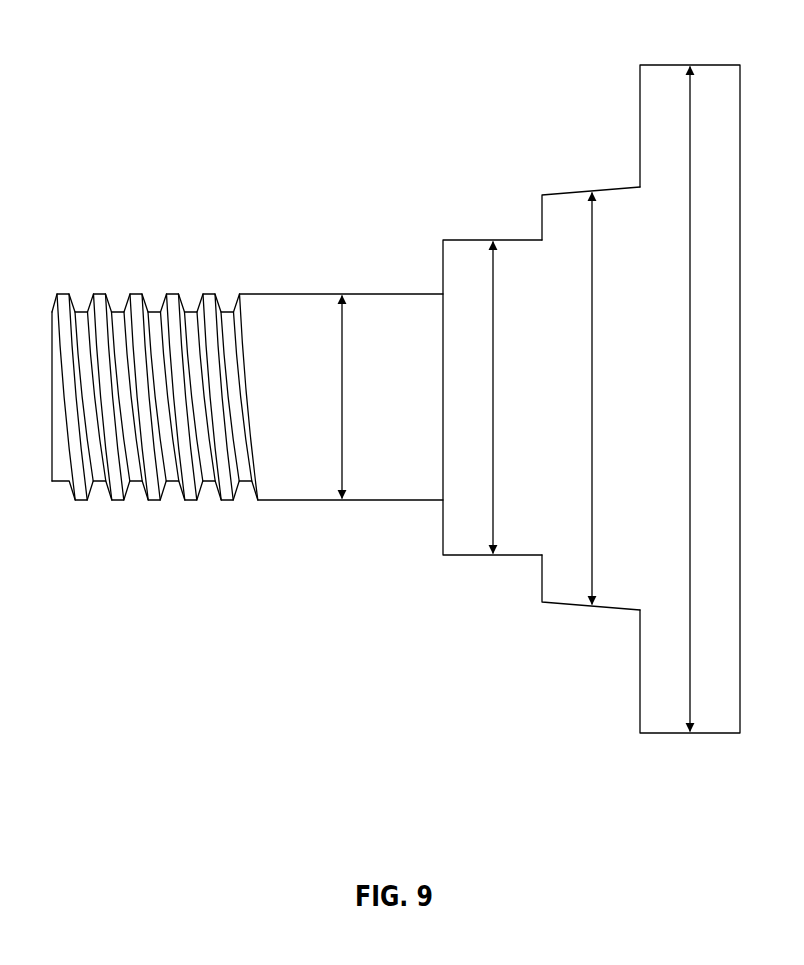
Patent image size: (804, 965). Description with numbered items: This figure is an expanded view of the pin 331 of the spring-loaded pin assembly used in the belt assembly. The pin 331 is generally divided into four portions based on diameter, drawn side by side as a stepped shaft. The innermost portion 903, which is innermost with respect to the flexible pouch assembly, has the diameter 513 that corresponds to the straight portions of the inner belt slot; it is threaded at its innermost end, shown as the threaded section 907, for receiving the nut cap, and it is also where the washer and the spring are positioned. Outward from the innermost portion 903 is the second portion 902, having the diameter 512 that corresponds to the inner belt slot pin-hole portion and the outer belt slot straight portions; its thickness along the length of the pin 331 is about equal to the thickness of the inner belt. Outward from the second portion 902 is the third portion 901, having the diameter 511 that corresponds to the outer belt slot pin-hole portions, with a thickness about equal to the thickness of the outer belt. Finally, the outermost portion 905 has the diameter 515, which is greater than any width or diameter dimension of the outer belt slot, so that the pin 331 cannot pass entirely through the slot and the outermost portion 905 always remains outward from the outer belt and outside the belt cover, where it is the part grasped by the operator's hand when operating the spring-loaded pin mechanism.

The pin 331 is at (311, 203).
The innermost portion 903 is at (442, 580).
The threaded section 907 is at (242, 268).
The diameter 513 is at (341, 328).
The second portion 902 is at (540, 617).
The diameter 512 is at (492, 273).
The third portion 901 is at (638, 743).
The diameter 511 is at (591, 220).
The outermost portion 905 is at (737, 767).
The diameter 515 is at (689, 95).